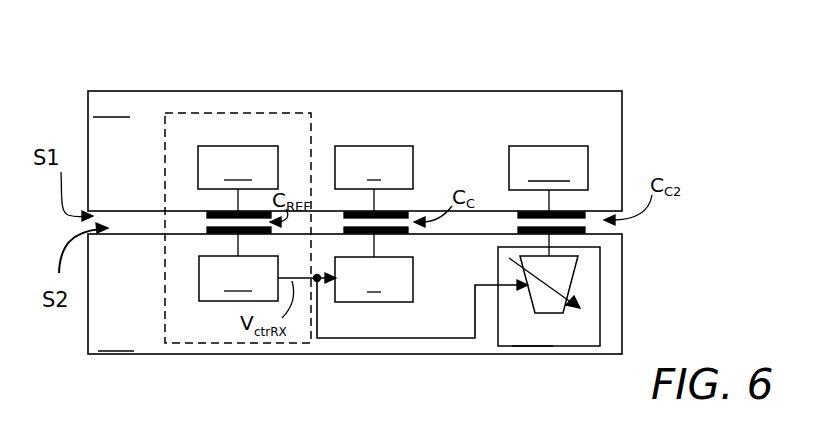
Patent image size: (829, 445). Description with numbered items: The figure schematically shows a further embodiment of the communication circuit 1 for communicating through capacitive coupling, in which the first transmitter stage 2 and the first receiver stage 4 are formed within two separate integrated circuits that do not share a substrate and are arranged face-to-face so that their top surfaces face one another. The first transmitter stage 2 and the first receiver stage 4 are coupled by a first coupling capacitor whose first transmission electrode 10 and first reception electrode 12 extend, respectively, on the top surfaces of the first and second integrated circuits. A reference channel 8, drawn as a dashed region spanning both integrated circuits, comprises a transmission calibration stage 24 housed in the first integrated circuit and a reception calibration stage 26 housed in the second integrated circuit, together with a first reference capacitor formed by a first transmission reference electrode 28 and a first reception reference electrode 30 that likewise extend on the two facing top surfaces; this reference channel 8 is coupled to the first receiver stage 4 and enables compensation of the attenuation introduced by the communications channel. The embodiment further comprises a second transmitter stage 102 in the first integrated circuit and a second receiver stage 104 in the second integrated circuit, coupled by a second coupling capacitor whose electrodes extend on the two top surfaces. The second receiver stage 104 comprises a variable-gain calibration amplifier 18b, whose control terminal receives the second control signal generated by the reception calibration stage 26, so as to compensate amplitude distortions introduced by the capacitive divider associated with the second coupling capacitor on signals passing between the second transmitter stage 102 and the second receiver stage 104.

The communication circuit 1 is at (616, 67).
The first transmitter stage 2 is at (374, 179).
The first receiver stage 4 is at (374, 267).
The reference channel 8 is at (216, 112).
The first transmission electrode 10 is at (398, 211).
The first reception electrode 12 is at (400, 234).
The calibration amplifier 18b is at (572, 283).
The transmission calibration stage 24 is at (238, 179).
The reception calibration stage 26 is at (238, 267).
The first transmission reference electrode 28 is at (216, 212).
The first reception reference electrode 30 is at (216, 233).
The second transmitter stage 102 is at (548, 182).
The second receiver stage 104 is at (549, 287).